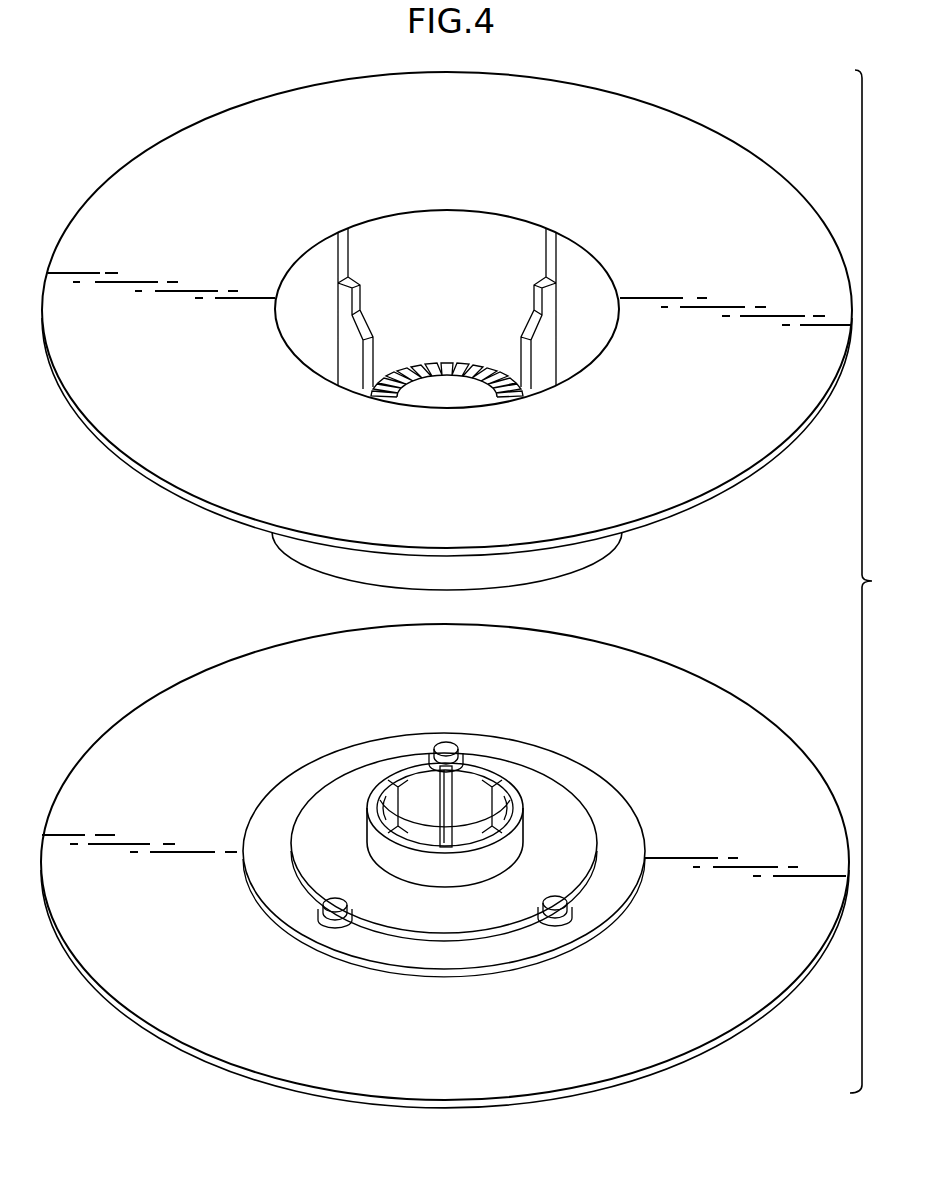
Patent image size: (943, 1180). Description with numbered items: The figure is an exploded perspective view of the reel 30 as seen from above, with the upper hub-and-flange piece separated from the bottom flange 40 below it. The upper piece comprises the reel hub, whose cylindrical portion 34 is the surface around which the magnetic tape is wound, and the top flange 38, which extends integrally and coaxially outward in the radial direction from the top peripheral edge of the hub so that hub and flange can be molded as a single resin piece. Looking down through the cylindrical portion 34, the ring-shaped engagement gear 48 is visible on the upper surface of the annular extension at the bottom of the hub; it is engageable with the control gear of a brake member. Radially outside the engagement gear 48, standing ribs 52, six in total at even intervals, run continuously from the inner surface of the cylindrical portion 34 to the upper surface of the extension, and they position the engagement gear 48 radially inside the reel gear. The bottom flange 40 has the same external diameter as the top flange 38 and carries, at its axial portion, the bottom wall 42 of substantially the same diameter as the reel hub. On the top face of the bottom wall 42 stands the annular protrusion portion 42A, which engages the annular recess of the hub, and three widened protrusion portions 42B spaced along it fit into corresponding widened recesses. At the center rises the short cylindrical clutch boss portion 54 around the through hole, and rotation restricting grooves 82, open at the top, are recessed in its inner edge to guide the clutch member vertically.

The reel 30 is at (447, 318).
The top flange 38 is at (740, 168).
The cylindrical portion 34 is at (455, 240).
The standing ribs 52 is at (547, 345).
The engagement gear 48 is at (450, 362).
The bottom flange 40 is at (722, 708).
The bottom wall 42 is at (587, 920).
The annular protrusion portion 42A is at (563, 807).
The widened protrusion portions 42B is at (313, 920).
The rotation restricting grooves 82 is at (447, 797).
The clutch boss portion 54 is at (448, 880).